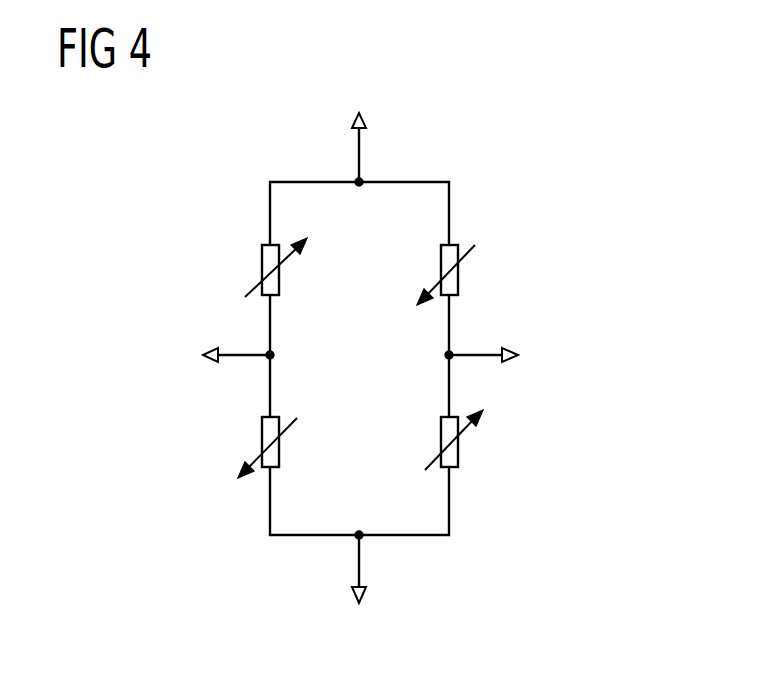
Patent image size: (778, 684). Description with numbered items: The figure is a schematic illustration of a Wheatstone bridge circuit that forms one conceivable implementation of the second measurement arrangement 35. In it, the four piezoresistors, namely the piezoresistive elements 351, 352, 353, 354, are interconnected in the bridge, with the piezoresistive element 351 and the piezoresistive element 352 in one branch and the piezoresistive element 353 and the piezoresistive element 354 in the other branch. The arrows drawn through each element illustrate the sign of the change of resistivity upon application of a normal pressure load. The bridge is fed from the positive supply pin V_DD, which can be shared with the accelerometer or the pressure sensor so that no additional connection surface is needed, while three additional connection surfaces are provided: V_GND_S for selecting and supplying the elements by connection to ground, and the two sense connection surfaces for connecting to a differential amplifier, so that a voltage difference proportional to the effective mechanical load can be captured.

The second measurement arrangement 35 is at (494, 103).
The piezoresistive element RS1 351 is at (279, 272).
The piezoresistive element RS2 352 is at (280, 445).
The piezoresistive element RS3 353 is at (455, 272).
The piezoresistive element RS4 354 is at (455, 445).